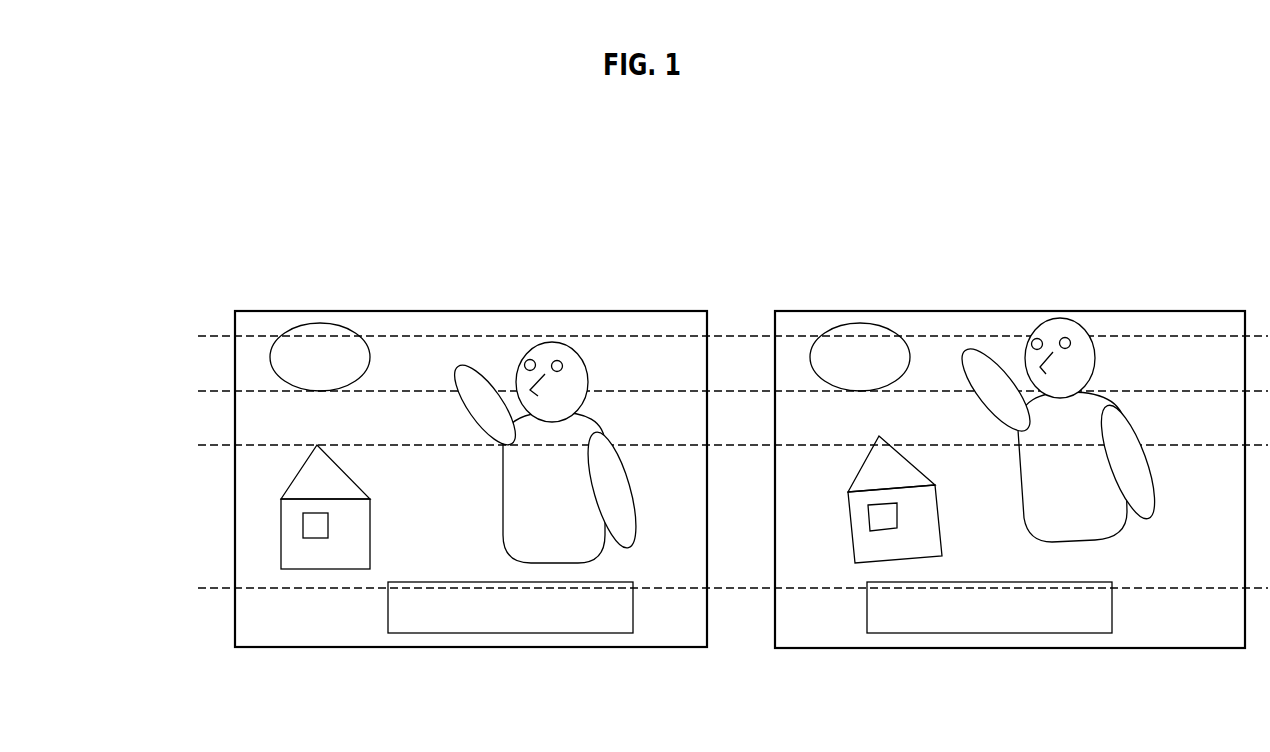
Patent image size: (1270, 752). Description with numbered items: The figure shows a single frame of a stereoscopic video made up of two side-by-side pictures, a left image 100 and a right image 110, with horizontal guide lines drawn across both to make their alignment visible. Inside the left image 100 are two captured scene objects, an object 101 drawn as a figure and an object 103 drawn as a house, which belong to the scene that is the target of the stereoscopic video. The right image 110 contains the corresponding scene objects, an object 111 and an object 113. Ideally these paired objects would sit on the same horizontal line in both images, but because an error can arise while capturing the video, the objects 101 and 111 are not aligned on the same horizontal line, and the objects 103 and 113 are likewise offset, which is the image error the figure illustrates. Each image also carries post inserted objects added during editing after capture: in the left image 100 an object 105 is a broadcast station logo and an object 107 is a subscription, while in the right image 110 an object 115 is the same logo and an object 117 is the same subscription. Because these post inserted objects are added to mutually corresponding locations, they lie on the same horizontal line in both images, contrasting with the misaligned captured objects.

The left image 100 is at (286, 310).
The object 101 is at (578, 352).
The object 103 is at (327, 569).
The object 105 is at (344, 332).
The object 107 is at (512, 633).
The right image 110 is at (826, 310).
The object 111 is at (1088, 332).
The object 113 is at (855, 563).
The object 115 is at (884, 332).
The object 117 is at (990, 633).